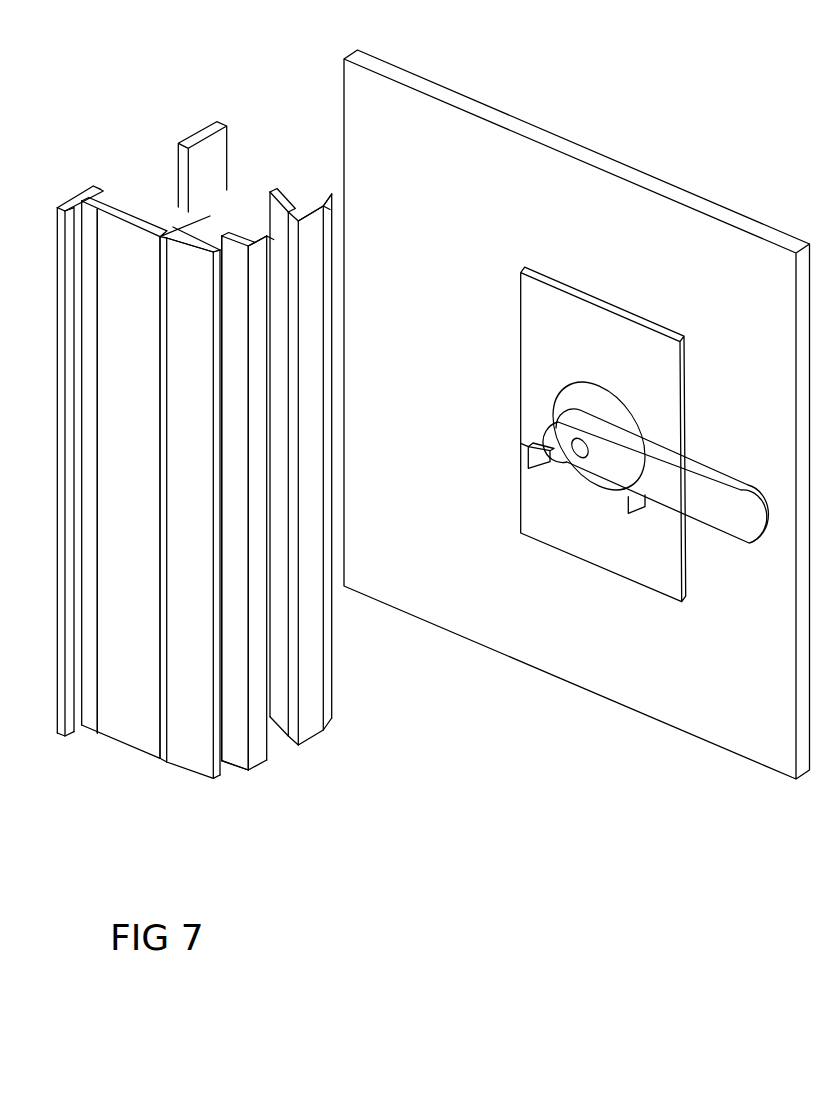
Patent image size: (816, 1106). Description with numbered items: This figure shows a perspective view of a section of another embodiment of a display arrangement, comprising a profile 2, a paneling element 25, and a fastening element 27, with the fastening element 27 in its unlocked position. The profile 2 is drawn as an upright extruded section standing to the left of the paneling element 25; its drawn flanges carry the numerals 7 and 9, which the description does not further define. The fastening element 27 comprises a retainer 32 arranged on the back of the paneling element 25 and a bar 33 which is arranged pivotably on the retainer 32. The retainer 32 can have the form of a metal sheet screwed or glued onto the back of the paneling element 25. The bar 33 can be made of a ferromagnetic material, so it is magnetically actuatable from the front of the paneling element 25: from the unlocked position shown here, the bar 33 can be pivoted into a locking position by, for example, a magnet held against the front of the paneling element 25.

The profile 2 is at (122, 232).
The flange 7 is at (287, 170).
The flange 9 is at (317, 183).
The paneling element 25 is at (593, 206).
The fastening element 27 is at (692, 860).
The retainer 32 is at (582, 537).
The bar 33 is at (718, 511).